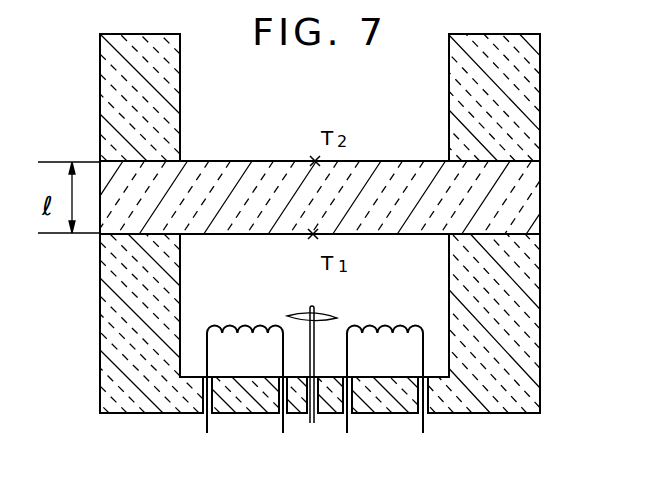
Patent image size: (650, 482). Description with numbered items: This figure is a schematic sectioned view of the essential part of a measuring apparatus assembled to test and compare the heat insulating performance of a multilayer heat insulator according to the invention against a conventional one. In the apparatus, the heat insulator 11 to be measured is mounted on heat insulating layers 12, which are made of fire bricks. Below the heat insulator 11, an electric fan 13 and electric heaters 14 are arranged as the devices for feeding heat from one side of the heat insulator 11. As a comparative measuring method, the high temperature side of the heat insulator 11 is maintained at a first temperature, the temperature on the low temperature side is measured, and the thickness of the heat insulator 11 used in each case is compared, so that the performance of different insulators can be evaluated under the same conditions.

The heat insulator 11 is at (533, 210).
The heat insulating layers 12 is at (531, 320).
The electric fan 13 is at (310, 307).
The electric heaters 14 is at (388, 323).